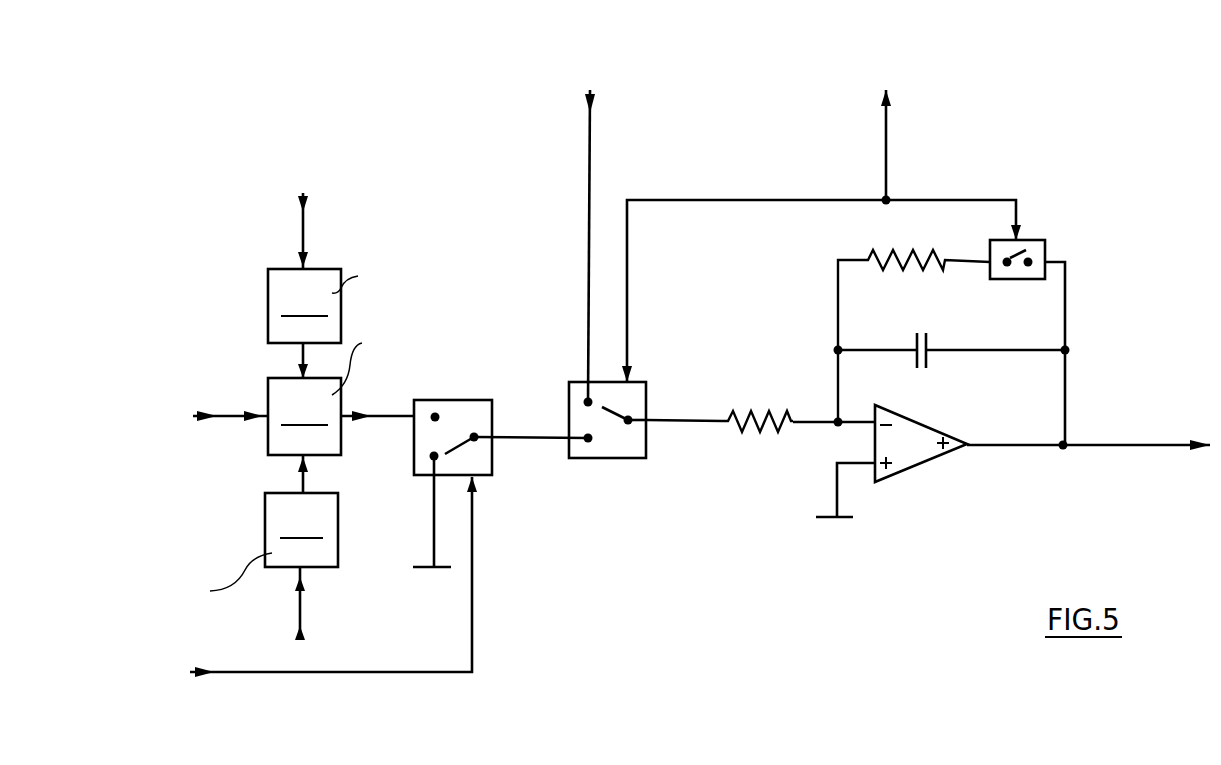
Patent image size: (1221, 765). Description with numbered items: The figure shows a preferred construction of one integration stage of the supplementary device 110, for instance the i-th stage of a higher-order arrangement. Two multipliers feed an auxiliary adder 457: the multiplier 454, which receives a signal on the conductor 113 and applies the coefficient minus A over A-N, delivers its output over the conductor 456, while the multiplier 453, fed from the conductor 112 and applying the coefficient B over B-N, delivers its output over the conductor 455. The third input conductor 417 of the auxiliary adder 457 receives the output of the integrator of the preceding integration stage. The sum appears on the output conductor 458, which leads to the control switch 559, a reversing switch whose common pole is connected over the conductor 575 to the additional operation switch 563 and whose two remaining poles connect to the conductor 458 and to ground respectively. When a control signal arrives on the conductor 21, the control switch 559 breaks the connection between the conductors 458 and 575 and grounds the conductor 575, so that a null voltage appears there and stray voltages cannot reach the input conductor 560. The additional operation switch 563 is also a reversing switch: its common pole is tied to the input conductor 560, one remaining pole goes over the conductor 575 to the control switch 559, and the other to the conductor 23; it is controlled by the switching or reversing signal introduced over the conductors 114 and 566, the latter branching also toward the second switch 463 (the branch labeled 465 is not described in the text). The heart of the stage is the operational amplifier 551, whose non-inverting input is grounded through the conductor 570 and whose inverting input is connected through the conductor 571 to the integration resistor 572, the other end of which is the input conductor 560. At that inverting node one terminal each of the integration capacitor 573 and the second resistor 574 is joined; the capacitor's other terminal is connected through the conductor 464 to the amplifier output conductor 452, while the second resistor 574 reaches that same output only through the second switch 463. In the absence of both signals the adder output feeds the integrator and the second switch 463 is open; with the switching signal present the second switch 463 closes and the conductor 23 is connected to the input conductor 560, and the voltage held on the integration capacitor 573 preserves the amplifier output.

The supplementary device 110 is at (362, 150).
The conductor 113 is at (304, 232).
The multiplier 454 is at (365, 306).
The conductor 456 is at (302, 353).
The auxiliary adder 457 is at (362, 385).
The third input conductor 417 is at (230, 418).
The conductor 455 is at (296, 482).
The multiplier 453 is at (222, 547).
The conductor 112 is at (301, 608).
The output conductor 458 is at (392, 418).
The control switch 559 is at (458, 400).
The conductor 21 is at (268, 673).
The conductor 575 is at (540, 440).
The conductor 23 is at (591, 131).
The conductor 566 is at (738, 198).
The conductor 114 is at (887, 108).
The control line 465 is at (935, 200).
The additional operation switch 563 is at (647, 388).
The input conductor 560 is at (702, 423).
The integration resistor 572 is at (755, 412).
The conductor 571 is at (850, 425).
The second resistor 574 is at (900, 266).
The second switch 463 is at (1046, 248).
The integration capacitor 573 is at (928, 337).
The conductor 464 is at (1066, 337).
The operational amplifier 551 is at (928, 458).
The conductor 570 is at (838, 493).
The output conductor 452 is at (1135, 445).